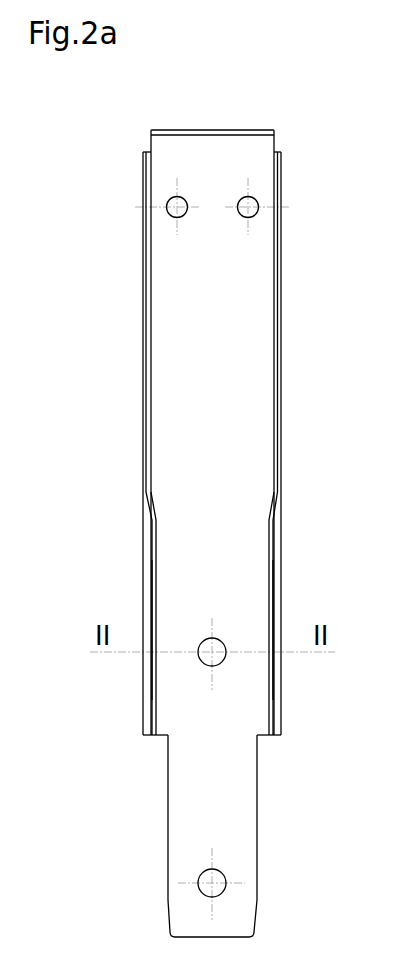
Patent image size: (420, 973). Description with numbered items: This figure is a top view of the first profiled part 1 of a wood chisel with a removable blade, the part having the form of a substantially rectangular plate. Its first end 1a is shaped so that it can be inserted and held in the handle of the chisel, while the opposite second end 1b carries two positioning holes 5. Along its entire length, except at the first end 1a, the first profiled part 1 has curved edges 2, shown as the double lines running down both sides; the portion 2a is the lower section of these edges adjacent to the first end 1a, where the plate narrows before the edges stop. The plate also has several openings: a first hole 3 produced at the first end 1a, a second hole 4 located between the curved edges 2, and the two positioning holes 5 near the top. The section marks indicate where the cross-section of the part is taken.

The first profiled part 1 is at (67, 502).
The first end 1a is at (187, 793).
The second end 1b is at (258, 166).
The curved edges 2 is at (144, 349).
The narrowed side wall portion 2a is at (145, 587).
The first hole 3 is at (219, 887).
The second hole 4 is at (219, 656).
The positioning holes 5 is at (246, 196).